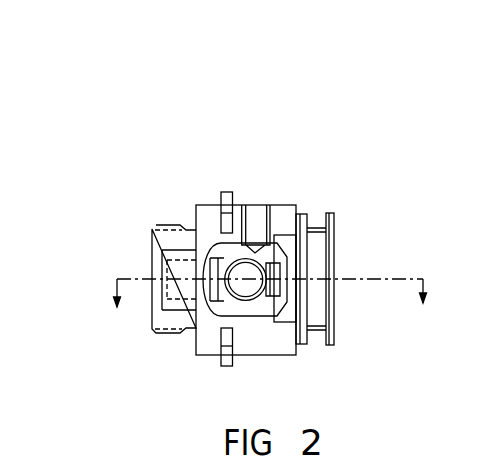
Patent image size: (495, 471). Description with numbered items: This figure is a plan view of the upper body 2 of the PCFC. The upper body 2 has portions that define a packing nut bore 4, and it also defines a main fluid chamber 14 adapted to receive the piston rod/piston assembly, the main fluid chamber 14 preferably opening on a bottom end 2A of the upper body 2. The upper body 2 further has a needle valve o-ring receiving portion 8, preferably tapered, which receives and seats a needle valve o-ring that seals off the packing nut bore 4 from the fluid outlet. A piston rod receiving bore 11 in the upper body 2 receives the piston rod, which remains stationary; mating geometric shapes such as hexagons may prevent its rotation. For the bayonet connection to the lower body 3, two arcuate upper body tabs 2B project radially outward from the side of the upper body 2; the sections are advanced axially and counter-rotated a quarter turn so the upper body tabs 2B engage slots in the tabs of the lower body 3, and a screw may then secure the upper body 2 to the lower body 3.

The upper body 2 is at (262, 145).
The bottom end 2A is at (335, 303).
The upper body tabs 2B is at (222, 195).
The lower body 3 is at (274, 315).
The packing nut bore 4 is at (152, 272).
The needle valve o-ring receiving portion 8 is at (201, 258).
The piston rod receiving bore 11 is at (285, 260).
The main fluid chamber 14 is at (324, 272).